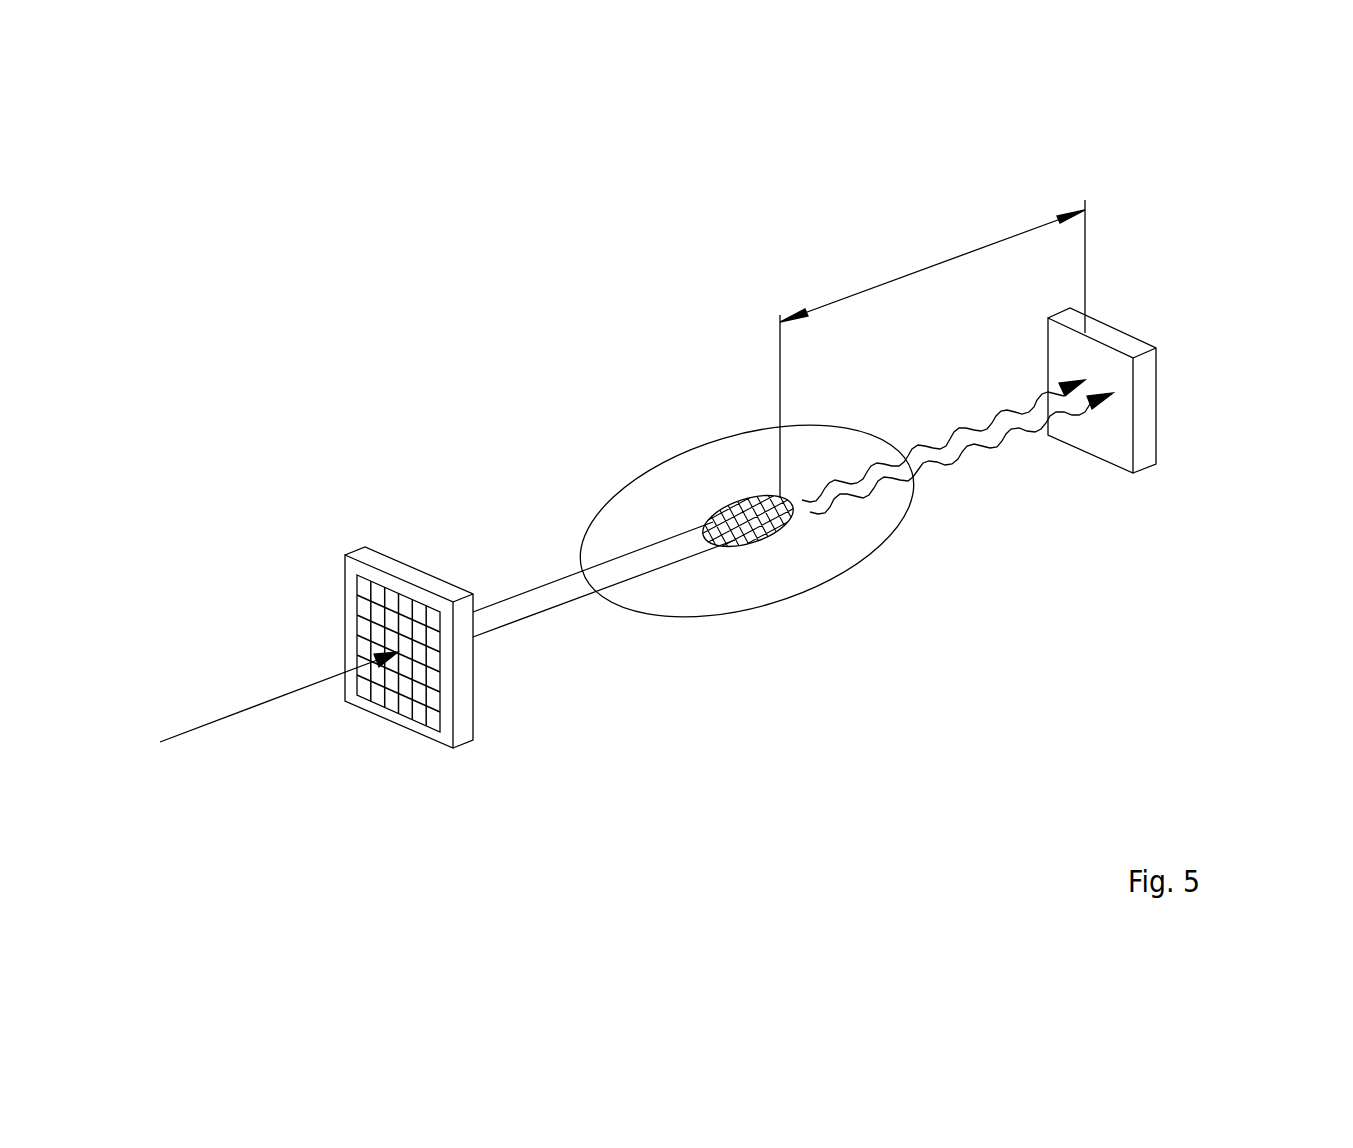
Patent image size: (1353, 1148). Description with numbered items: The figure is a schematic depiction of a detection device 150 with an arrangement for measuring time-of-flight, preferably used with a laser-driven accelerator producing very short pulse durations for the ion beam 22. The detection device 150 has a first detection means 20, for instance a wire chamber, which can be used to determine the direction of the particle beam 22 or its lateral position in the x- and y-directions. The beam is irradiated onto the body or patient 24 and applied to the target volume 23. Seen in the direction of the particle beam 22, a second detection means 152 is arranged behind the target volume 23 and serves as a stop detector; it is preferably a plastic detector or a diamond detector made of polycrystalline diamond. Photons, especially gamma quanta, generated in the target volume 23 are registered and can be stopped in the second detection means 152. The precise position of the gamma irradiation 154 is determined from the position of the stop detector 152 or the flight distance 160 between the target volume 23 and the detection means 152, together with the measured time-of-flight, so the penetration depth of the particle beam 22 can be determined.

The detection device 150 is at (557, 287).
The first detection means 20 is at (465, 688).
The ion beam 22 is at (278, 693).
The target volume 23 is at (747, 497).
The patient 24 is at (840, 428).
The gamma irradiation 154 is at (973, 450).
The second detection means 152 is at (1147, 423).
The flight distance 160 is at (932, 267).